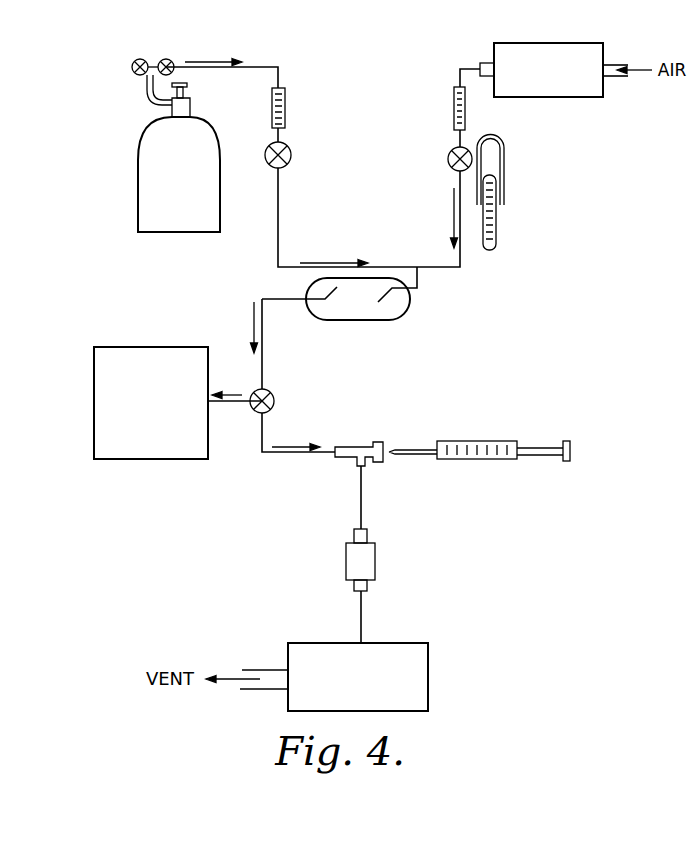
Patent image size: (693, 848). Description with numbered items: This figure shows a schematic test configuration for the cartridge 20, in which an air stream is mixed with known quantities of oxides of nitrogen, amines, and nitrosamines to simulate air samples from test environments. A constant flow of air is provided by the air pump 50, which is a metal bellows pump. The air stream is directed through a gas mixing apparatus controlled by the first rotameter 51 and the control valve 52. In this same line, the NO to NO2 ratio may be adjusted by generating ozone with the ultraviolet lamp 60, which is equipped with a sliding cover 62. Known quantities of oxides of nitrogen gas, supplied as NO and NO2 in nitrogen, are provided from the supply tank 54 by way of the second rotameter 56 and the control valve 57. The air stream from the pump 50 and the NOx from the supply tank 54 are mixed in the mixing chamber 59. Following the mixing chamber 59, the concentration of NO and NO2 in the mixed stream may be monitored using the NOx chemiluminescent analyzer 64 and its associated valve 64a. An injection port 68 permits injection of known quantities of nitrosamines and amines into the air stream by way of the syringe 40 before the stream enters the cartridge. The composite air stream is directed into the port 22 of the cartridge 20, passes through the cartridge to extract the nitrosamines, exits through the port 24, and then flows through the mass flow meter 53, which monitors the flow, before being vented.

The air pump 50 is at (528, 42).
The first rotameter 51 is at (454, 97).
The control valve 52 is at (448, 157).
The sliding cover 62 is at (503, 162).
The ultraviolet lamp 60 is at (498, 236).
The supply tank 54 is at (138, 160).
The second rotameter 56 is at (287, 105).
The control valve 57 is at (292, 155).
The mixing chamber 59 is at (409, 307).
The NOx chemiluminescent analyzer 64 is at (140, 347).
The valve 64a is at (275, 392).
The injection port 68 is at (361, 442).
The syringe 40 is at (477, 441).
The port 22 is at (367, 530).
The cartridge 20 is at (375, 560).
The port 24 is at (367, 585).
The mass flow meter 53 is at (428, 665).